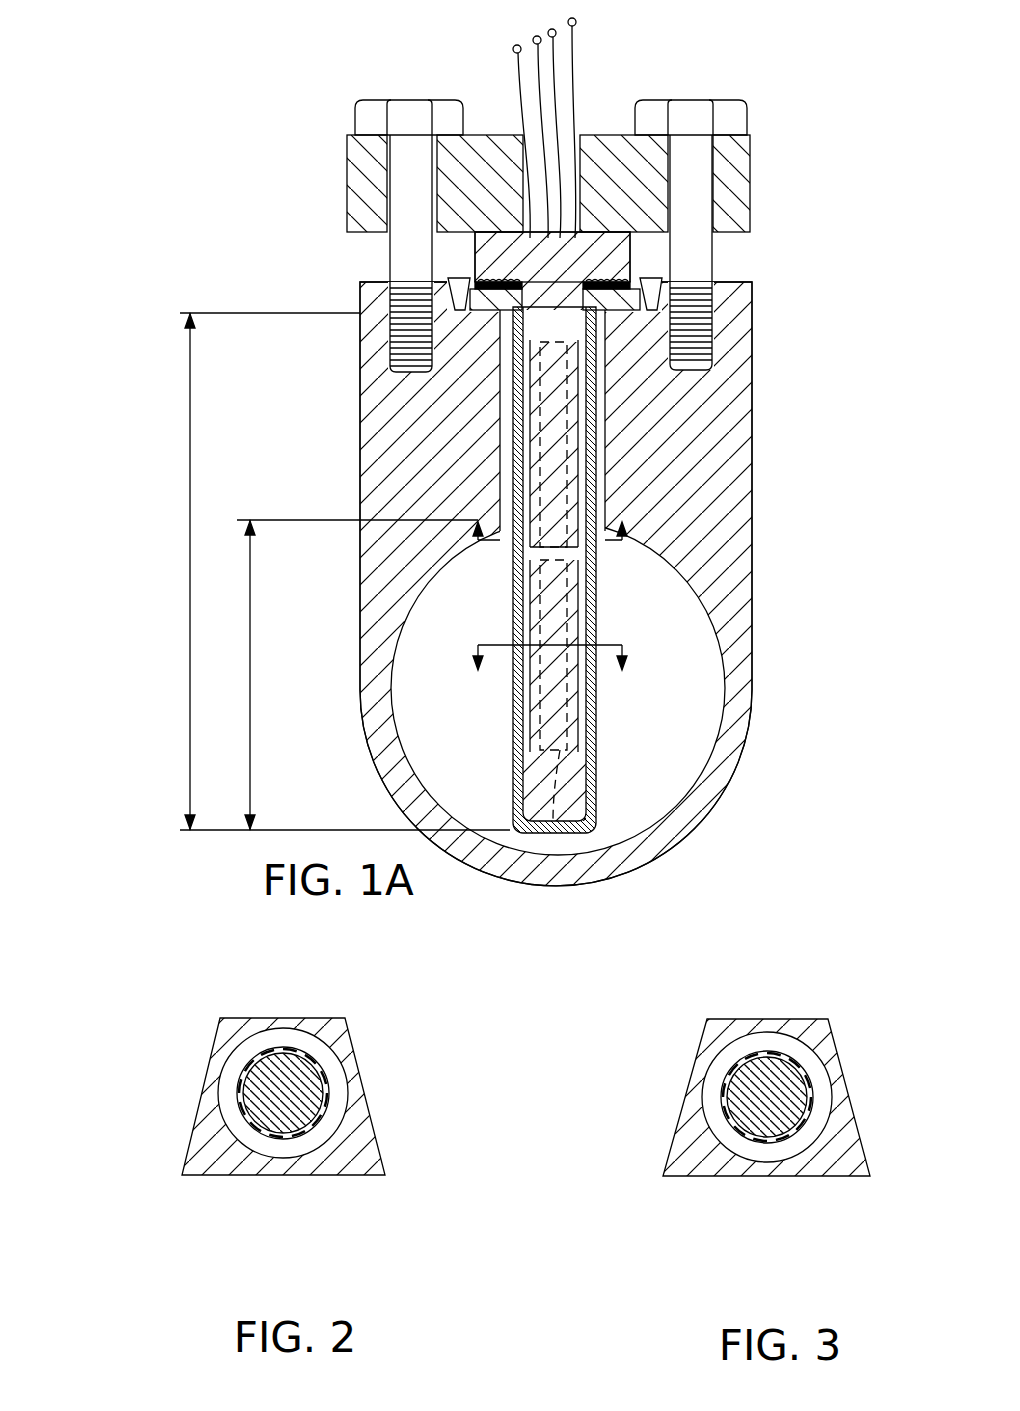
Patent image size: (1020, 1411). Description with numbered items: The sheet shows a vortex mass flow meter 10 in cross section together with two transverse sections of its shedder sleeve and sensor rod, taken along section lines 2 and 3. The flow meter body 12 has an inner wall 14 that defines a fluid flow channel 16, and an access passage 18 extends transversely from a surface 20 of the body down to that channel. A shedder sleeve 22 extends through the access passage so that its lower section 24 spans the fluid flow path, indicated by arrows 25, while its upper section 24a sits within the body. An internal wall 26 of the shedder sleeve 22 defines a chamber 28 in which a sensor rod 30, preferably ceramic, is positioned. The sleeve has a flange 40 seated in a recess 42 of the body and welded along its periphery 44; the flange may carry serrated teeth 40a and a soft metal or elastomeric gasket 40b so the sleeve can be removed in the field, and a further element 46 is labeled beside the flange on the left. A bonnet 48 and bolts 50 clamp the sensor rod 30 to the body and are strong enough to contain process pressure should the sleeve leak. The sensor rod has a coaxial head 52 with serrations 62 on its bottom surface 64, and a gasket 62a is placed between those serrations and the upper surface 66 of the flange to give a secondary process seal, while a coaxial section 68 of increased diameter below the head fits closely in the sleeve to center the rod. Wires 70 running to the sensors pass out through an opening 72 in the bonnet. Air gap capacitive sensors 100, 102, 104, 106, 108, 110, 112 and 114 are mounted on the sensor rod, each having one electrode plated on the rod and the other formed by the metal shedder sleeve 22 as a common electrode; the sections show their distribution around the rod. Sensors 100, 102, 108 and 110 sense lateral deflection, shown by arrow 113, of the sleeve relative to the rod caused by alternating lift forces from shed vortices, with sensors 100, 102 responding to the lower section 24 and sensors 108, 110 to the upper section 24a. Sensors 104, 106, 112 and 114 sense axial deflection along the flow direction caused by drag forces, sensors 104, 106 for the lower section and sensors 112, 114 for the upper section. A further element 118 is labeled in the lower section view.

In FIG. 1A, the vortex mass flow meter 10 is at (842, 258).
In FIG. 1A, the flow meter body 12 is at (754, 515).
In FIG. 1A, the inner wall 14 is at (728, 668).
In FIG. 1A, the fluid flow channel 16 is at (668, 704).
In FIG. 1A, the access passage 18 is at (612, 386).
In FIG. 1A, the surface 20 is at (738, 282).
In FIG. 1A, the shedder sleeve 22 is at (596, 442).
In FIG. 2, the shedder sleeve 22 is at (385, 1156).
In FIG. 3, the shedder sleeve 22 is at (870, 1168).
In FIG. 1A, the lower section 24 is at (495, 625).
In FIG. 1A, the upper section 24a is at (458, 455).
In FIG. 2, the fluid flow path 25 is at (298, 1212).
In FIG. 1A, the internal wall 26 is at (578, 615).
In FIG. 2, the internal wall 26 is at (335, 1065).
In FIG. 3, the internal wall 26 is at (740, 1128).
In FIG. 2, the chamber 28 is at (316, 1045).
In FIG. 3, the chamber 28 is at (820, 1075).
In FIG. 1A, the sensor rod 30 is at (516, 340).
In FIG. 2, the sensor rod 30 is at (230, 1035).
In FIG. 3, the sensor rod 30 is at (790, 1060).
In FIG. 1A, the flange 40 is at (622, 312).
In FIG. 1A, the serrated teeth 40a is at (682, 296).
In FIG. 1A, the gasket 40b is at (688, 336).
In FIG. 1A, the recess 42 is at (498, 312).
In FIG. 1A, the periphery 44 is at (651, 280).
In FIG. 1A, the seal ring 46 is at (452, 284).
In FIG. 1A, the bonnet 48 is at (752, 184).
In FIG. 1A, the bolts 50 is at (434, 108).
In FIG. 1A, the coaxial head 52 is at (590, 240).
In FIG. 1A, the serrations 62 is at (612, 282).
In FIG. 1A, the gasket 62a is at (470, 300).
In FIG. 1A, the bottom surface 64 is at (504, 282).
In FIG. 1A, the upper surface 66 is at (458, 280).
In FIG. 1A, the coaxial section 68 is at (572, 292).
In FIG. 1A, the wires 70 is at (592, 42).
In FIG. 1A, the opening 72 is at (586, 192).
In FIG. 1A, the air gap capacitive sensor 100 is at (528, 726).
In FIG. 2, the air gap capacitive sensor 100 is at (240, 1092).
In FIG. 1A, the air gap capacitive sensor 102 is at (580, 726).
In FIG. 2, the air gap capacitive sensor 102 is at (330, 1098).
In FIG. 2, the air gap capacitive sensor 104 is at (295, 1130).
In FIG. 1A, the air gap capacitive sensor 106 is at (553, 822).
In FIG. 2, the air gap capacitive sensor 106 is at (270, 1055).
In FIG. 1A, the air gap capacitive sensor 108 is at (530, 488).
In FIG. 1A, the air gap capacitive sensor 110 is at (596, 415).
In FIG. 3, the air gap capacitive sensor 110 is at (815, 1108).
In FIG. 3, the air gap capacitive sensor 112 is at (755, 1135).
In FIG. 2, the lateral deflection 113 is at (68, 1058).
In FIG. 3, the lateral deflection 113 is at (655, 1085).
In FIG. 1A, the air gap capacitive sensor 114 is at (560, 462).
In FIG. 3, the air gap capacitive sensor 114 is at (760, 1055).
In FIG. 3, the sleeve portion 118 is at (725, 1082).
In FIG. 1A, the section line 2- 2 is at (551, 673).
In FIG. 1A, the section line 3- 3 is at (551, 545).